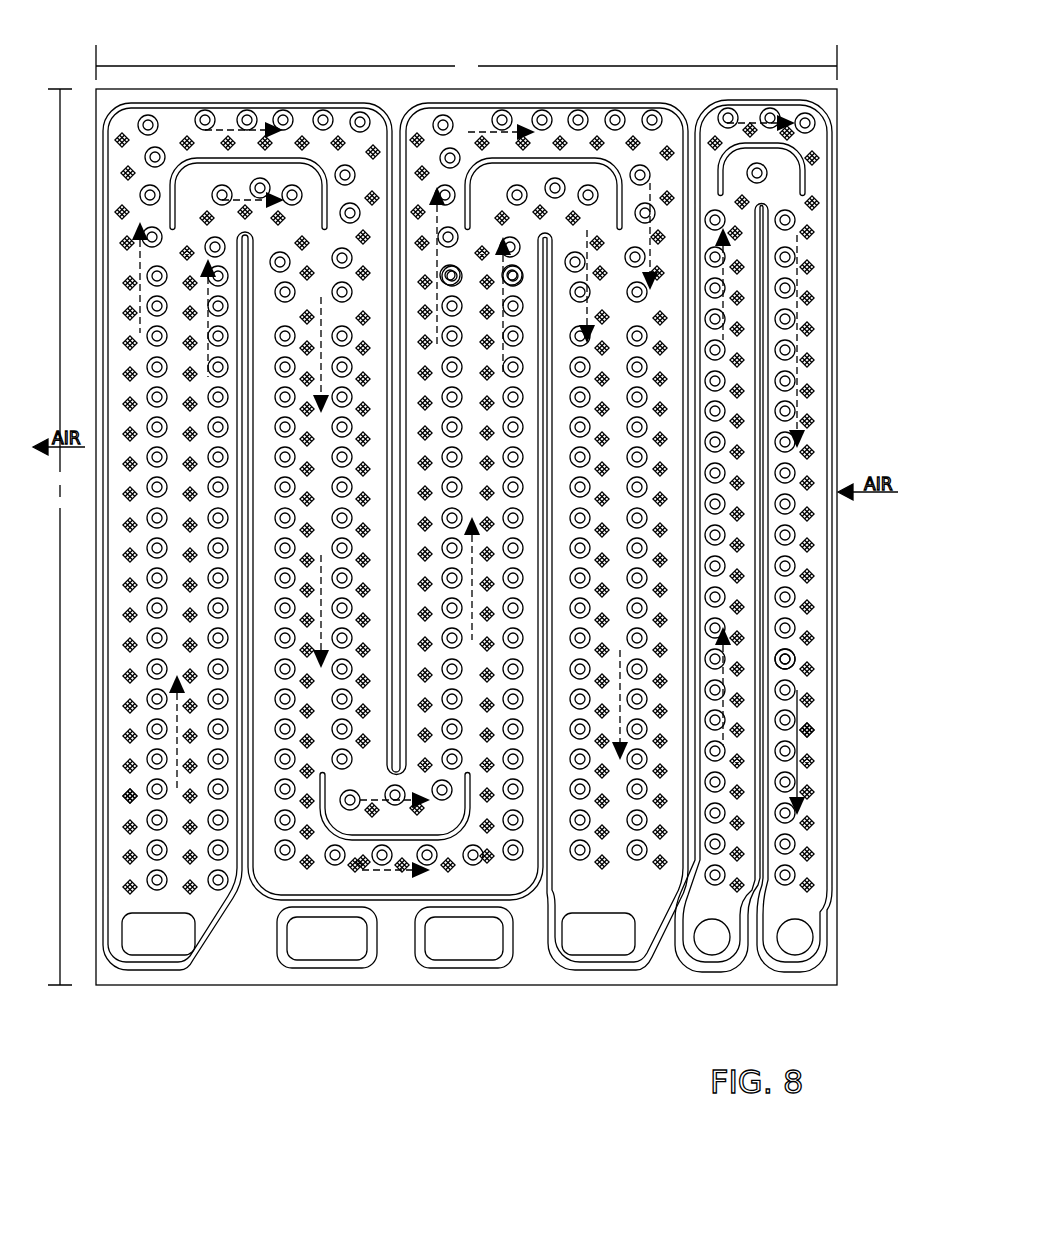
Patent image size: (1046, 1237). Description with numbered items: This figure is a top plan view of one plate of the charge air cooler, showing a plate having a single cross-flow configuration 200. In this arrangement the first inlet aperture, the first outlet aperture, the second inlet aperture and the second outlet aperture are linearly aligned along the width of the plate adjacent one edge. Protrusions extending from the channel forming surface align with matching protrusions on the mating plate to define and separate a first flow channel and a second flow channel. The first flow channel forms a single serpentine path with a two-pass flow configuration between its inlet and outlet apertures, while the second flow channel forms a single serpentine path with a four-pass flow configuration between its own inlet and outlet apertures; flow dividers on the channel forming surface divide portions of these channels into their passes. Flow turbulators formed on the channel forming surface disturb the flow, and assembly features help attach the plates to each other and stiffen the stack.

The single cross-flow configuration 200 is at (258, 40).